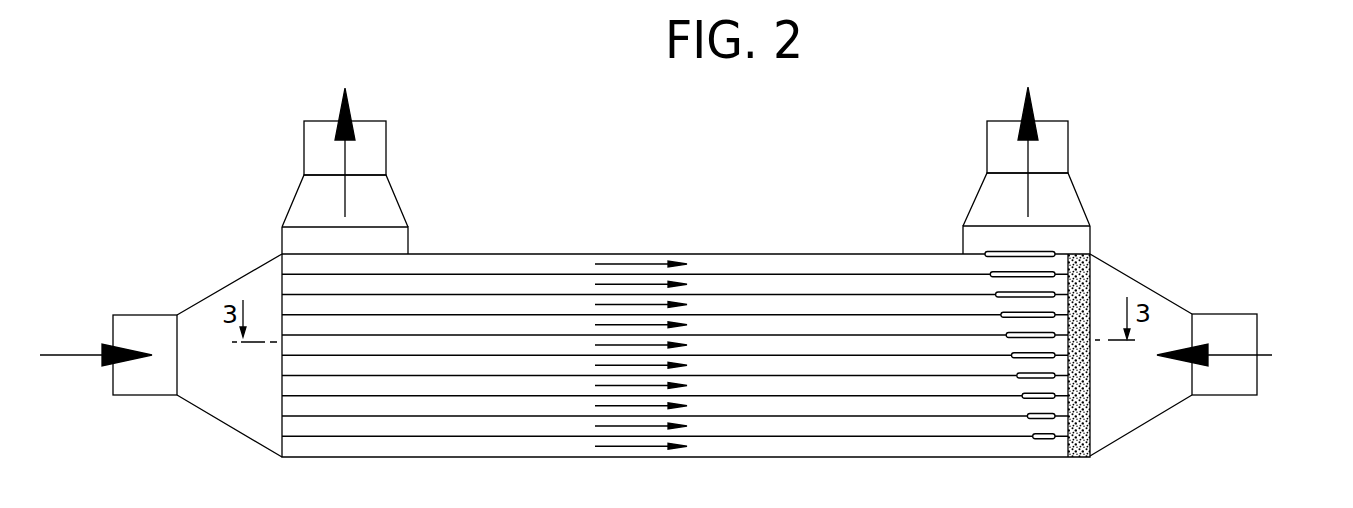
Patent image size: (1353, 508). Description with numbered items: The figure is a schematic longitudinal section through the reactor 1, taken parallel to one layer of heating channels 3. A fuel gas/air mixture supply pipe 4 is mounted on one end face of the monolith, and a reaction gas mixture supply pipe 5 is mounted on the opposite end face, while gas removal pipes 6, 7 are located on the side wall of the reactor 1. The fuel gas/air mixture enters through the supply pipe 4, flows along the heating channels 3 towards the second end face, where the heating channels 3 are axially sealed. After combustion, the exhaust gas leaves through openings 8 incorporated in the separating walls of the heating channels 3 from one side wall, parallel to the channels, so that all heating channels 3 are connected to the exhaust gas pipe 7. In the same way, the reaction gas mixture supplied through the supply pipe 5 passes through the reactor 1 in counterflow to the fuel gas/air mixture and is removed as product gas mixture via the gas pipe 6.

The reactor 1 is at (641, 253).
The heating channels 3 is at (760, 323).
The fuel gas/air mixture supply pipe 4 is at (240, 403).
The reaction gas mixture supply pipe 5 is at (1147, 403).
The gas pipe 6 is at (391, 204).
The exhaust gas pipe 7 is at (992, 195).
The openings 8 is at (1035, 377).